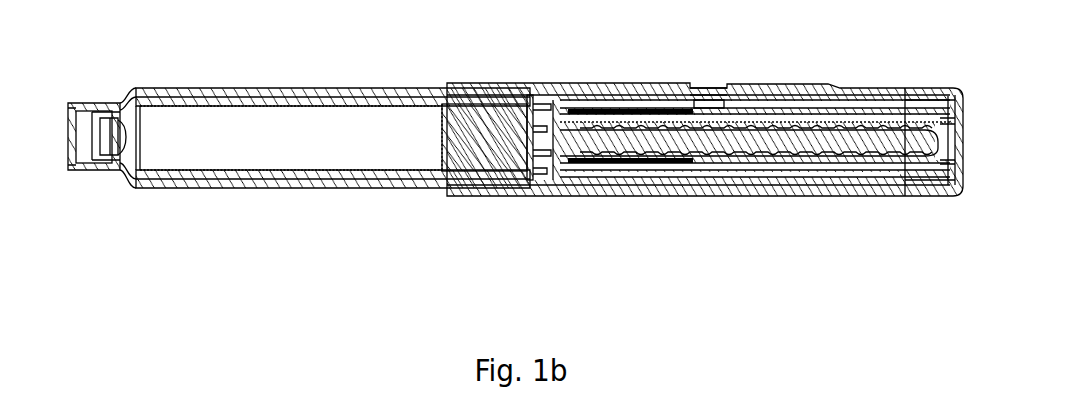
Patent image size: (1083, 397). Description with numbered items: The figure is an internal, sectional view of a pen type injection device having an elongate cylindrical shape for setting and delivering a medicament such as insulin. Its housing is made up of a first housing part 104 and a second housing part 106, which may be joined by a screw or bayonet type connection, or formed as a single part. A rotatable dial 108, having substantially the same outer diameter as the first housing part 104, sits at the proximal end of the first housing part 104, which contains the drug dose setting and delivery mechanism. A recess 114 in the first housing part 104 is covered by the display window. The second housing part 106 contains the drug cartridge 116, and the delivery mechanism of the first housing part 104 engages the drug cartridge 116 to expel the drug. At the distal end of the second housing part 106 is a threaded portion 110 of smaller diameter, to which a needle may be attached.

The first housing part 104 is at (607, 84).
The second housing part 106 is at (250, 91).
The rotatable dial 108 is at (912, 89).
The threaded portion 110 is at (100, 107).
The recess 114 is at (705, 91).
The drug cartridge 116 is at (353, 104).